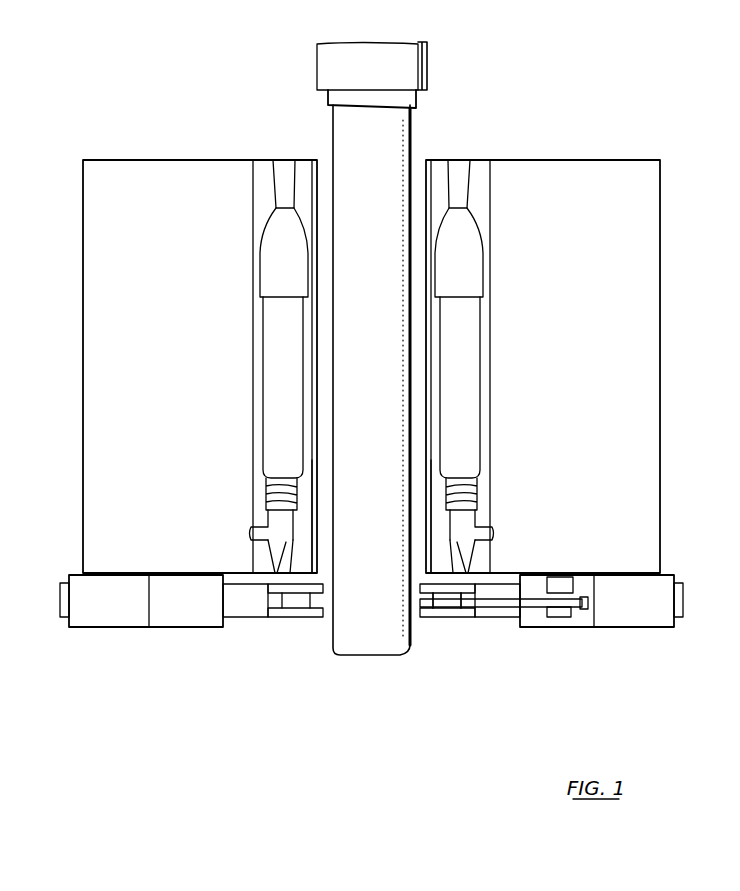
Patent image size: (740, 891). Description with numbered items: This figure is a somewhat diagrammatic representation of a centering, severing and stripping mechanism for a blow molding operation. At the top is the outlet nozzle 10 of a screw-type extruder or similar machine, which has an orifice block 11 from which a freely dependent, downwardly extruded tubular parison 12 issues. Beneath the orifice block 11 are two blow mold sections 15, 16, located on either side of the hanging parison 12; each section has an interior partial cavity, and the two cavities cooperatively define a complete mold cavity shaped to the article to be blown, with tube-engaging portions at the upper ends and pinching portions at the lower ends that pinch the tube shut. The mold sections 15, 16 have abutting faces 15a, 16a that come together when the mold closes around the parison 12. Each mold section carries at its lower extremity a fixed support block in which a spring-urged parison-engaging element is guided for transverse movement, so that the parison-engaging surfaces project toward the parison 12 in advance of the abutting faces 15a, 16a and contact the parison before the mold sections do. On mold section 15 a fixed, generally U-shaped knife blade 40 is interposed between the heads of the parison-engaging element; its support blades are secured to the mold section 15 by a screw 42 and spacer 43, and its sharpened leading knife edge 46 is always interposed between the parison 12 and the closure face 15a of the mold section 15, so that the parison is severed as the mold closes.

The outlet nozzle 10 is at (432, 42).
The orifice block 11 is at (418, 100).
The tubular parison 12 is at (360, 178).
The blow mold section 15 is at (572, 251).
The abutting face 15a is at (433, 529).
The blow mold section 16 is at (150, 251).
The abutting face 16a is at (305, 553).
The knife blade 40 is at (504, 599).
The screw 42 is at (556, 614).
The spacer 43 is at (566, 583).
The knife edge 46 is at (447, 598).